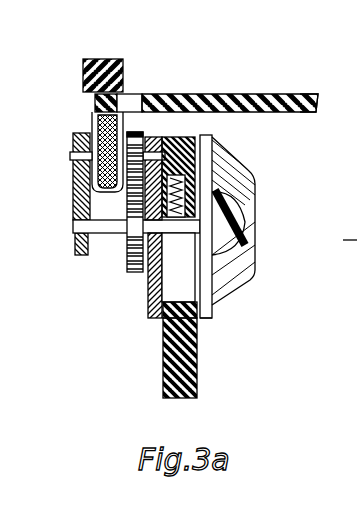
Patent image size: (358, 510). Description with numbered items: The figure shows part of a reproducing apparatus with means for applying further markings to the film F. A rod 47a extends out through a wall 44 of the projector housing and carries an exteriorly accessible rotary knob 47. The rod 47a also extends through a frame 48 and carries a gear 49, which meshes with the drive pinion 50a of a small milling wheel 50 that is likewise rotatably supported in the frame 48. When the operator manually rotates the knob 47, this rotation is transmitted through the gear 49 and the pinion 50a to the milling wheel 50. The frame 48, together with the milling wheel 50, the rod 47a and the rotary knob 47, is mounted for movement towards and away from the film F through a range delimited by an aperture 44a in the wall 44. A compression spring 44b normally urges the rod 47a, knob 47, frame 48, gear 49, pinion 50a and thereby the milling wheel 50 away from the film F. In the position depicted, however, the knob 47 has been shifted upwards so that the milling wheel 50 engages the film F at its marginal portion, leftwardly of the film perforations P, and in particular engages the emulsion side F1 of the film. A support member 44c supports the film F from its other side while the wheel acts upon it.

The wall 44 is at (197, 362).
The aperture 44a is at (205, 290).
The compression spring 44b is at (245, 175).
The support member 44c is at (115, 66).
The rotary knob 47 is at (256, 272).
The rod 47a is at (225, 222).
The frame 48 is at (148, 305).
The gear 49 is at (132, 250).
The milling wheel 50 is at (93, 120).
The drive pinion 50a is at (157, 134).
The film perforations P is at (206, 103).
The film F is at (210, 97).
The emulsion side F1 is at (278, 113).